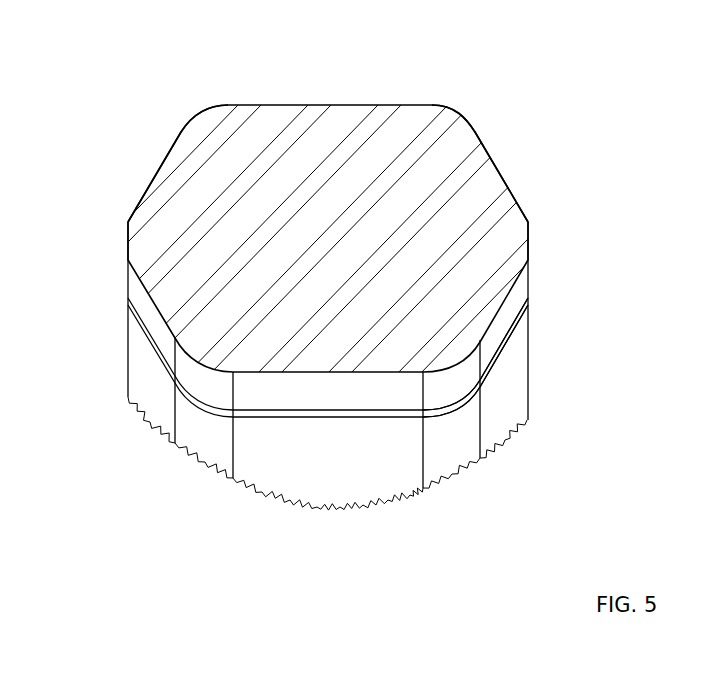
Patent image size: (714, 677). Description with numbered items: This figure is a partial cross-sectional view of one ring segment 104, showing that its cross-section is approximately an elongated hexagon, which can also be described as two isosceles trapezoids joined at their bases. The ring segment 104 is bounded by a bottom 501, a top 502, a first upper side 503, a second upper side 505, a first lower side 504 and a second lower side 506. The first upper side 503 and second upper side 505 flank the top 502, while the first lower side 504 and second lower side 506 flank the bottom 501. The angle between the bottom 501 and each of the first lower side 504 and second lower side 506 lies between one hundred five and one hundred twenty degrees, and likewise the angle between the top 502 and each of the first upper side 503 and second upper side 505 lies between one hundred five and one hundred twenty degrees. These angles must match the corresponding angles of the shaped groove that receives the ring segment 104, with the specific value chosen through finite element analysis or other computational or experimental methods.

The ring segment 104 is at (316, 538).
The bottom 501 is at (315, 378).
The top 502 is at (283, 100).
The first upper side 503 is at (150, 177).
The first lower side 504 is at (152, 310).
The second upper side 505 is at (497, 160).
The second lower side 506 is at (512, 305).